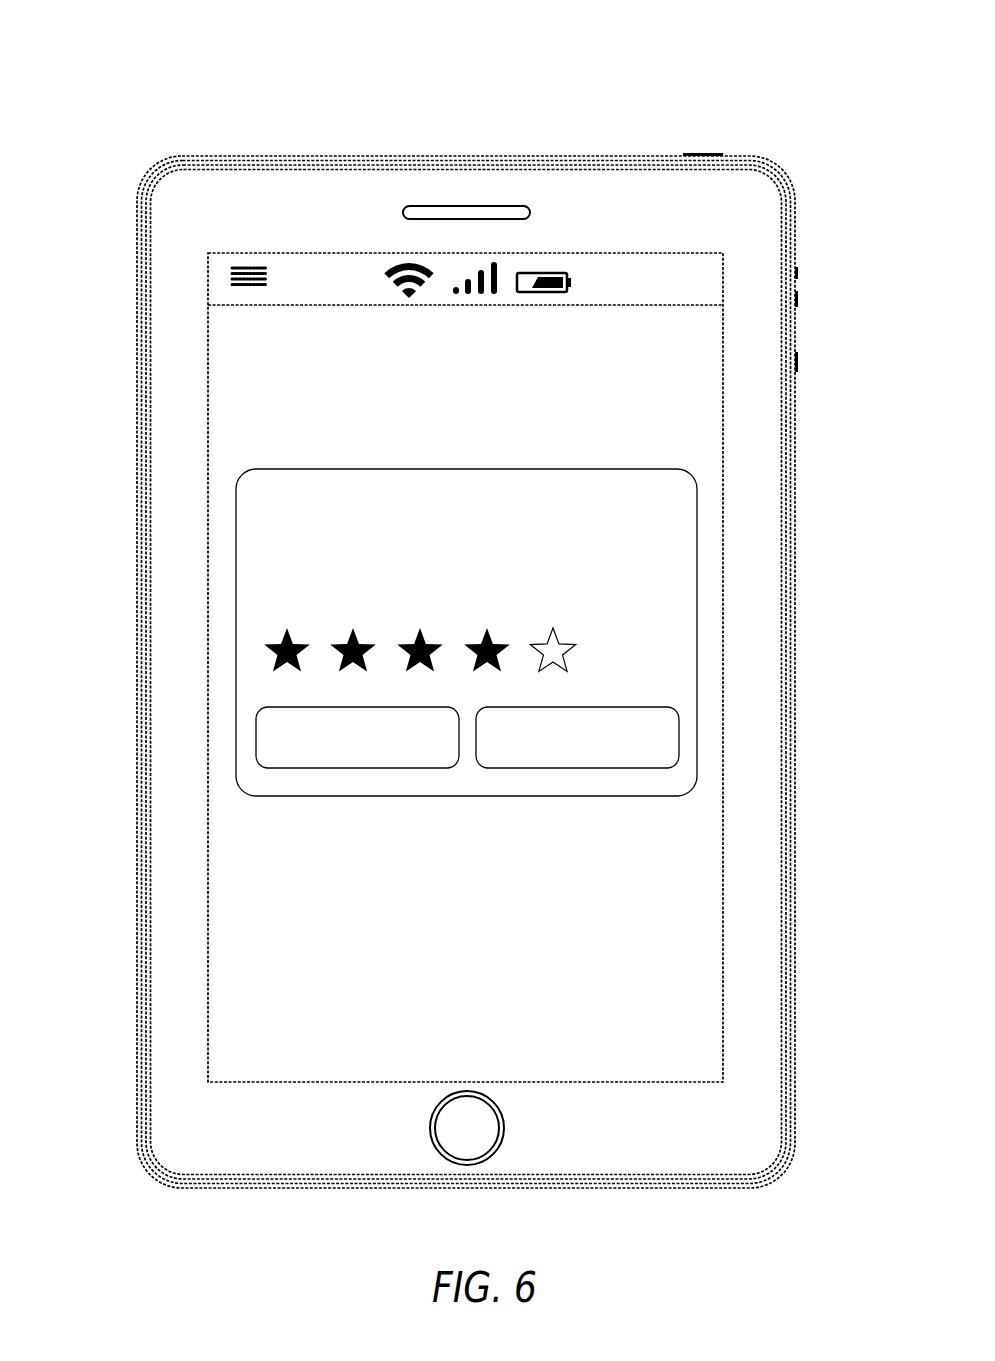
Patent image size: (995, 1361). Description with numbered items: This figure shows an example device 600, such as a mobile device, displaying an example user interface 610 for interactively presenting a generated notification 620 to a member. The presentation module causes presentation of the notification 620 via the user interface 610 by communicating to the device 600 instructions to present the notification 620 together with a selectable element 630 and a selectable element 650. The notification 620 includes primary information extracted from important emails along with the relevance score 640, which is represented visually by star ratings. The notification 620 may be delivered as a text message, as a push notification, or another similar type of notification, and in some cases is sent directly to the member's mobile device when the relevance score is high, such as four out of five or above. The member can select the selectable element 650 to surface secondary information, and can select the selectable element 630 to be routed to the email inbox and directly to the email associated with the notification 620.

The device 600 is at (98, 85).
The user interface 610 is at (207, 253).
The notification 620 is at (237, 492).
The selectable element 630 is at (253, 737).
The relevance score 640 is at (583, 657).
The selectable element 650 is at (667, 742).